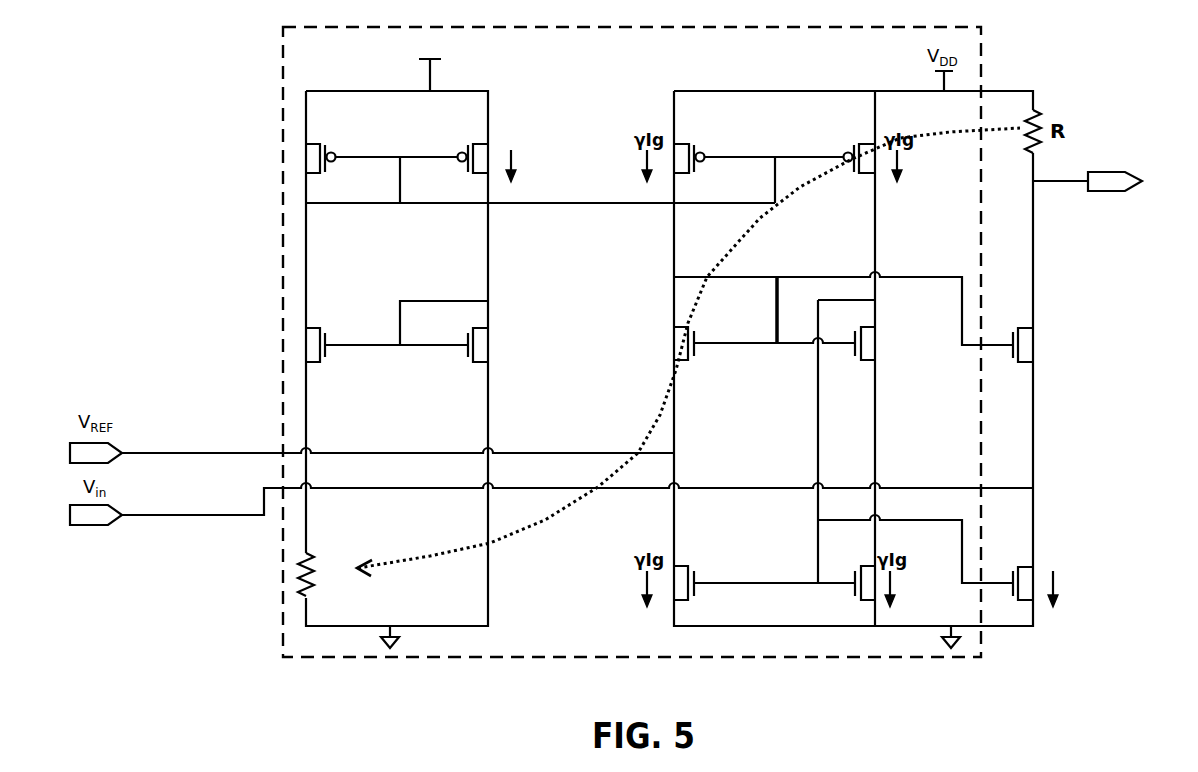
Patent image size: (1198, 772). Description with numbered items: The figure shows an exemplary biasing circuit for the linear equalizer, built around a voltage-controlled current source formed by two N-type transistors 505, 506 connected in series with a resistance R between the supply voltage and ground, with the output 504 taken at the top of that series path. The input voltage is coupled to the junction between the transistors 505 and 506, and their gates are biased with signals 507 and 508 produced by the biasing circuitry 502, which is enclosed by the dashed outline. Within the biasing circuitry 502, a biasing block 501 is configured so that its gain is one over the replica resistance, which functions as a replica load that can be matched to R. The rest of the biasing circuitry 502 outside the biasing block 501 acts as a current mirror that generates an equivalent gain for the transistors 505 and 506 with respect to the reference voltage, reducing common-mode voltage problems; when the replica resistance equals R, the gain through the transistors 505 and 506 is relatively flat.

The biasing block 501 is at (536, 341).
The biasing circuitry 502 is at (632, 357).
The output 504 is at (1095, 174).
The N-type transistor 505 is at (1096, 345).
The N-type transistor 506 is at (1057, 578).
The signal 507 is at (843, 299).
The signal 508 is at (915, 549).